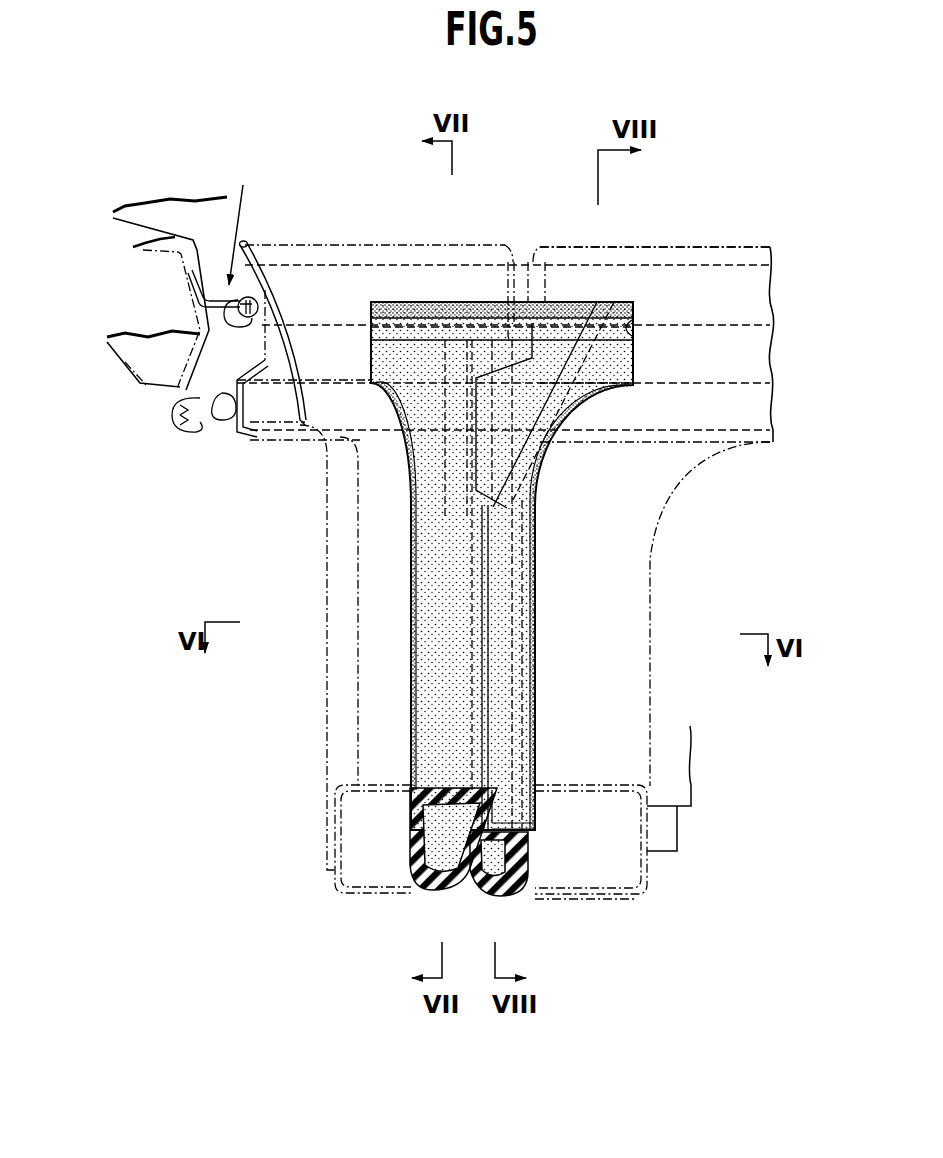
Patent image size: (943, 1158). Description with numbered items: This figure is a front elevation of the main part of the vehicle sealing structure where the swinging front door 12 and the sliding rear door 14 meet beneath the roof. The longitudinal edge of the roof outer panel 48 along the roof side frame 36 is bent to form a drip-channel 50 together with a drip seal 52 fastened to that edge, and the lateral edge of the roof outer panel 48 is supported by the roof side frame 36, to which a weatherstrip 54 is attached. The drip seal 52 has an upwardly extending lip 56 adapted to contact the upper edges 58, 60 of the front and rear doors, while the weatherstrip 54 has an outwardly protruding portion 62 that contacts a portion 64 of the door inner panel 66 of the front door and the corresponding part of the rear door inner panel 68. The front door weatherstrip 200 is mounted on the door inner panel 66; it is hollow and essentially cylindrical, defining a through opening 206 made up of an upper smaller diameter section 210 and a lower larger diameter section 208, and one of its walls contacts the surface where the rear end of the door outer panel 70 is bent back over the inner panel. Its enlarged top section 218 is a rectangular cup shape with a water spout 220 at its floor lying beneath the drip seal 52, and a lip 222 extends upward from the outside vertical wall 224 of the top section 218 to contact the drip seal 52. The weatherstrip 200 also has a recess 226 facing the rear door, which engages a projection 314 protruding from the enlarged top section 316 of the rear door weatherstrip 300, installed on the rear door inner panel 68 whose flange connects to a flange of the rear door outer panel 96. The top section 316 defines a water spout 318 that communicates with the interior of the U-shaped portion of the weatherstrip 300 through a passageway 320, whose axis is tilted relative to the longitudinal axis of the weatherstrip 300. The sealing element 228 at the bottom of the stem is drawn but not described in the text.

The swinging front door 12 is at (373, 630).
The sliding rear door 14 is at (622, 657).
The roof side frame 36 is at (142, 387).
The roof outer panel 48 is at (162, 218).
The drip-channel 50 is at (246, 223).
The drip seal 52 is at (264, 292).
The weatherstrip 54 is at (192, 433).
The lip 56 is at (255, 287).
The upper edge of front door 58 is at (243, 262).
The upper edge of rear door 60 is at (622, 247).
The protruding portion of weatherstrip 62 is at (222, 422).
The portion of door inner panel 64 is at (256, 440).
The door inner panel 66 is at (267, 358).
The rear door inner panel 68 is at (582, 896).
The door outer panel 70 is at (295, 341).
The outer panel of rear door 96 is at (757, 362).
The weatherstrip 200 is at (432, 692).
The through opening 206 is at (437, 530).
The lower larger diameter section 208 is at (440, 592).
The upper smaller diameter section 210 is at (411, 490).
The enlarged top section 218 is at (458, 300).
The water spout 220 is at (507, 258).
The lip 222 is at (400, 302).
The outside vertical wall 224 is at (371, 330).
The recess 226 is at (478, 402).
The weatherstrip seal 228 is at (508, 787).
The weatherstrip 300 is at (525, 693).
The projection 314 is at (445, 497).
The enlarged top section 316 is at (620, 362).
The water spout 318 is at (632, 323).
The passageway 320 is at (540, 456).